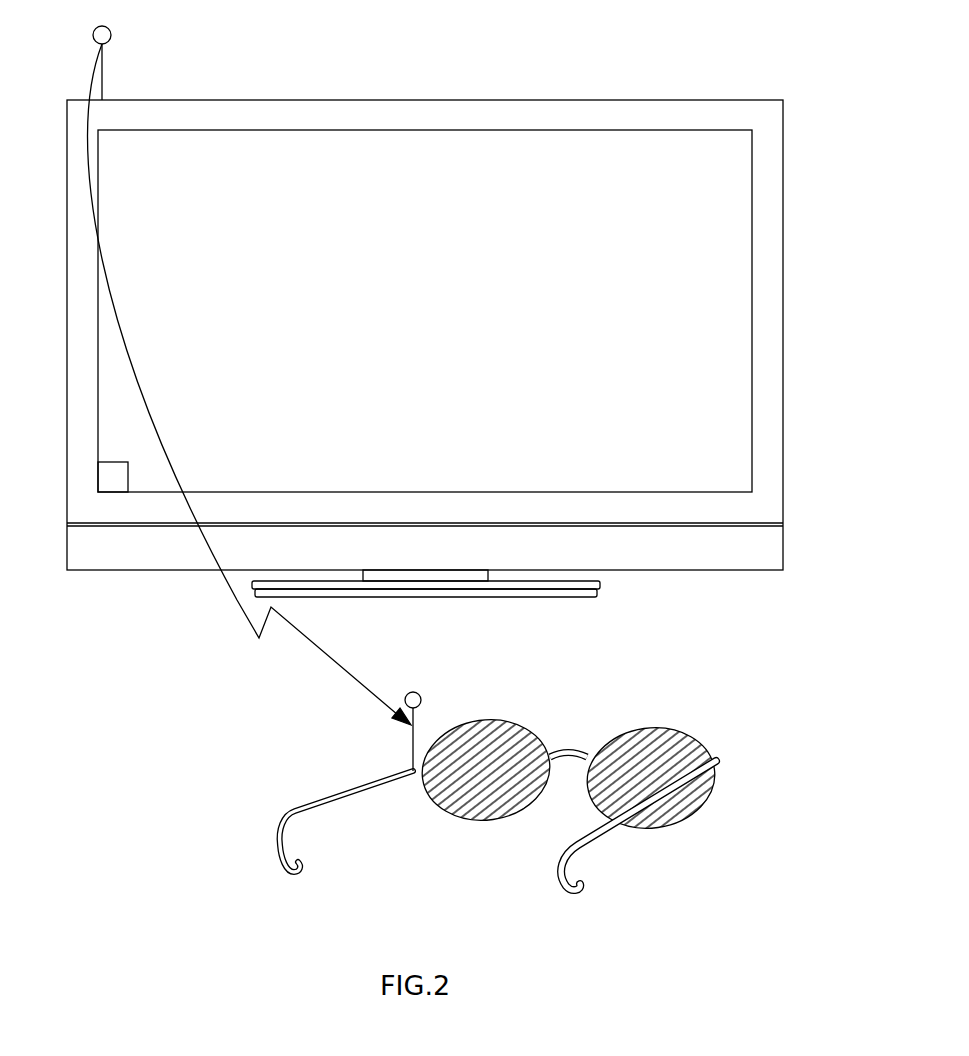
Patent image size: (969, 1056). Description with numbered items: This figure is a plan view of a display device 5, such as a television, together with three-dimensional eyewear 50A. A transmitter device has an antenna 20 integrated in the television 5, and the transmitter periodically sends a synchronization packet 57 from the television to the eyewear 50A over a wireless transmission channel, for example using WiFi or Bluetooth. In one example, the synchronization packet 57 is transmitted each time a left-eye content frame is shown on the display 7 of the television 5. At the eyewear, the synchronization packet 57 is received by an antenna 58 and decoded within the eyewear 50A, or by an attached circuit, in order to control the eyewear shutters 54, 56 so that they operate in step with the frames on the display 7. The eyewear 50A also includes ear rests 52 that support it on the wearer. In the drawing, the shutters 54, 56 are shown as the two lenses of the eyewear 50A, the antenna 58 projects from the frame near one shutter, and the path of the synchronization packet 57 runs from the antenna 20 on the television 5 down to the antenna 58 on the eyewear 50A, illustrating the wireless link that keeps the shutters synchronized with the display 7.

The display device 5 is at (807, 230).
The display 7 is at (563, 163).
The antenna 20 is at (102, 78).
The synchronization packet 57 is at (237, 600).
The three-dimensional eyewear 50A is at (520, 779).
The ear rests 52 is at (594, 834).
The eyewear shutter 54 is at (497, 748).
The eyewear shutter 56 is at (655, 757).
The antenna 58 is at (410, 753).